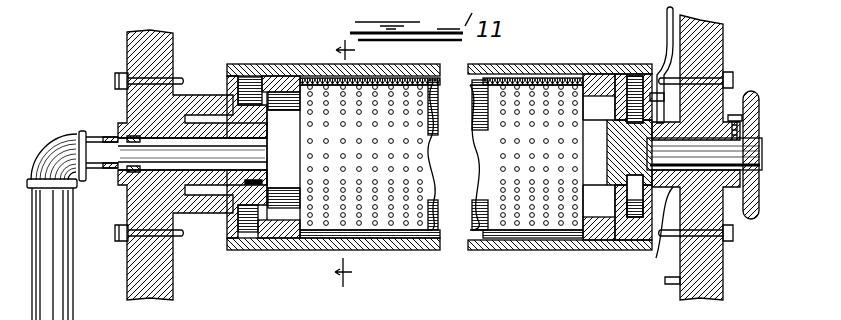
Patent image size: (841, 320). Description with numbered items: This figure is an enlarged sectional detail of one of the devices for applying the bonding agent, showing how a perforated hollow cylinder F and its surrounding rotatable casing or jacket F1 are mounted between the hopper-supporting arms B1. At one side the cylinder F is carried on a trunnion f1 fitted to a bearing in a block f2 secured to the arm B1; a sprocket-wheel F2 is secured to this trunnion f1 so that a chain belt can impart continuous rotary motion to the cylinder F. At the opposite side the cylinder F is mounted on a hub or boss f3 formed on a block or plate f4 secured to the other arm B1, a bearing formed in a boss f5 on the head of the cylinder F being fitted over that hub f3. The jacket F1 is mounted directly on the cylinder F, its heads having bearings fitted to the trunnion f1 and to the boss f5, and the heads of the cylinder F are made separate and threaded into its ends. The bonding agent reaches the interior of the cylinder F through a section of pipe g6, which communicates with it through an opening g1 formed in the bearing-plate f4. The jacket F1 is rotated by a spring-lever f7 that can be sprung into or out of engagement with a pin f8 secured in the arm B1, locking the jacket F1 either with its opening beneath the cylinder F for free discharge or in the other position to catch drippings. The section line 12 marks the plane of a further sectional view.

The hopper-supporting arm B1 is at (165, 56).
The section of pipe g6 is at (100, 136).
The opening g1 is at (243, 157).
The rotatable casing or jacket F1 is at (533, 250).
The perforated hollow cylinder F is at (473, 248).
The trunnion f1 is at (760, 167).
The sprocket-wheel F2 is at (757, 110).
The spring-lever f7 is at (667, 25).
The pin f8 is at (652, 290).
The block f2 is at (650, 235).
The block or plate f4 is at (177, 189).
The boss f5 is at (189, 270).
The hub or boss f3 is at (221, 185).
The section line 12- 12 is at (342, 166).